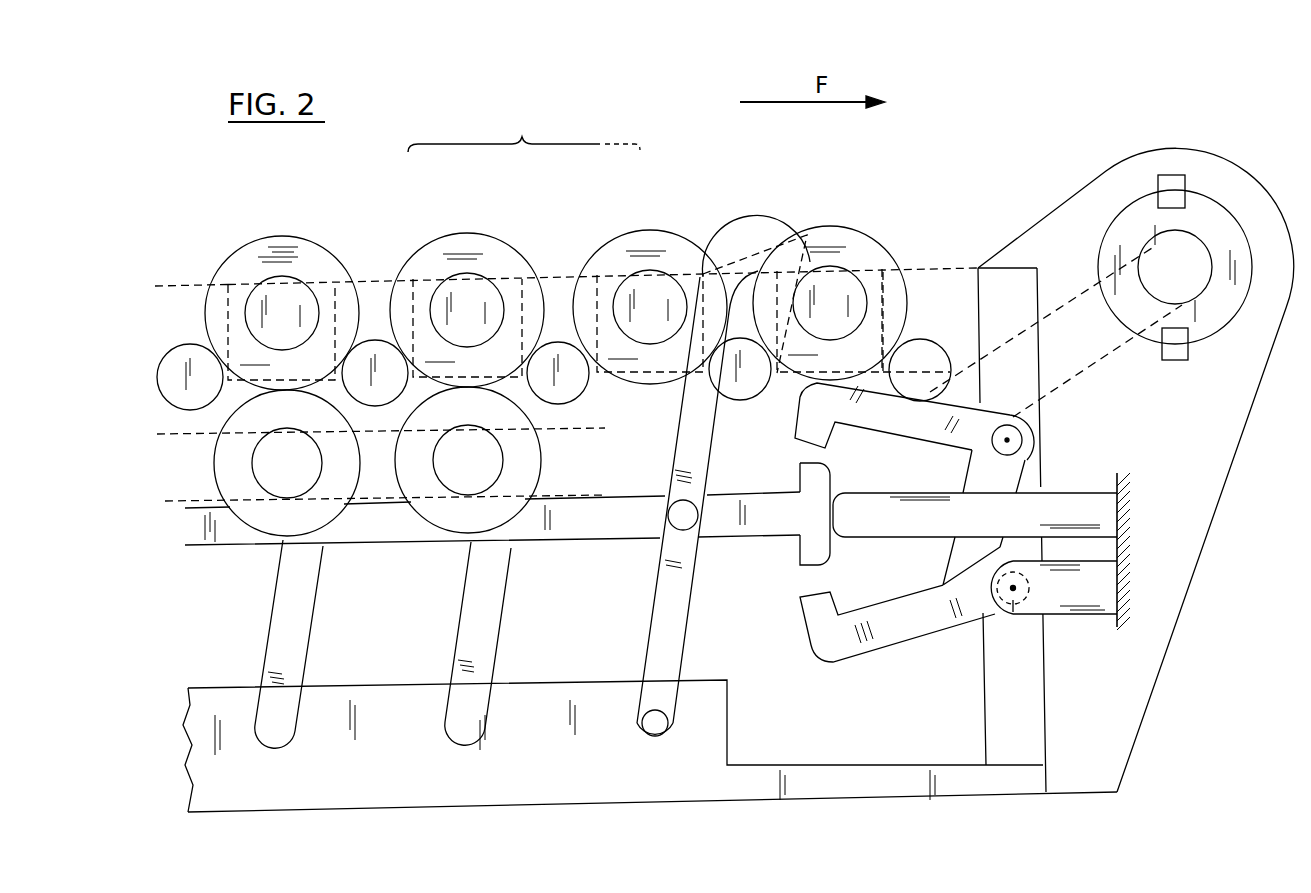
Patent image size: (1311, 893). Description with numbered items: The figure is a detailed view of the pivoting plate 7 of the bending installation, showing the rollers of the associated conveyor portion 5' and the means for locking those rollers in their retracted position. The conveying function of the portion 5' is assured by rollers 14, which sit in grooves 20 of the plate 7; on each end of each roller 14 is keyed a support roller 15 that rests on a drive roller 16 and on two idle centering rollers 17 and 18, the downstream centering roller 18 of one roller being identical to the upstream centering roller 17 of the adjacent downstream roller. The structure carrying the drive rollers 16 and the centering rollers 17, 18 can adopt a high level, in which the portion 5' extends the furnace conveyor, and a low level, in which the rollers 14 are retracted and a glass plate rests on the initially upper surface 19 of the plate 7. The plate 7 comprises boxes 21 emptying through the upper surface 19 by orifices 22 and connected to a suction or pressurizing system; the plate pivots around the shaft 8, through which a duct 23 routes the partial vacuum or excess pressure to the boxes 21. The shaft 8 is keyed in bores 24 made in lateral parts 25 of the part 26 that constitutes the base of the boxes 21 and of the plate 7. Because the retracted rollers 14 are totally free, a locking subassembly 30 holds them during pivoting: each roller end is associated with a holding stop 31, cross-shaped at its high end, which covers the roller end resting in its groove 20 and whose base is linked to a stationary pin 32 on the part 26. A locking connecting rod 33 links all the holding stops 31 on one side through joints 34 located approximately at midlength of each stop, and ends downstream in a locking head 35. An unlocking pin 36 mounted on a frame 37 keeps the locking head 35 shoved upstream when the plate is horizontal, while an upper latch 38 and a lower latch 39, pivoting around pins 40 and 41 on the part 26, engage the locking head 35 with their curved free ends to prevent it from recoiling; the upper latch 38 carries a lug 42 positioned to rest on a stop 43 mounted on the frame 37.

The conveyor portion 5' is at (524, 129).
The pivoting plate 7 is at (176, 302).
The pivoting shaft 8 is at (1252, 236).
The rollers 14 is at (297, 307).
The support roller 15 is at (290, 258).
The drive roller 16 is at (250, 518).
The upstream idle centering roller 17 is at (190, 397).
The downstream idle centering roller 18 is at (373, 395).
The initially upper surface 19 is at (567, 272).
The grooves 20 is at (636, 352).
The boxes 21 is at (732, 613).
The orifices 22 is at (198, 283).
The duct 23 is at (1186, 281).
The bores 24 is at (1185, 183).
The lateral parts 25 is at (1218, 428).
The base part 26 is at (1023, 780).
The locking subassembly 30 is at (658, 480).
The holding stop 31 is at (292, 632).
The stationary pin 32 is at (668, 737).
The locking connecting rod 33 is at (617, 517).
The joint 34 is at (697, 517).
The locking head 35 is at (808, 543).
The unlocking pin 36 is at (1083, 503).
The frame 37 is at (1123, 518).
The upper latch 38 is at (895, 416).
The lower latch 39 is at (898, 630).
The pin 40 is at (1020, 442).
The pin 41 is at (1017, 617).
The lug 42 is at (977, 557).
The stop 43 is at (1085, 598).